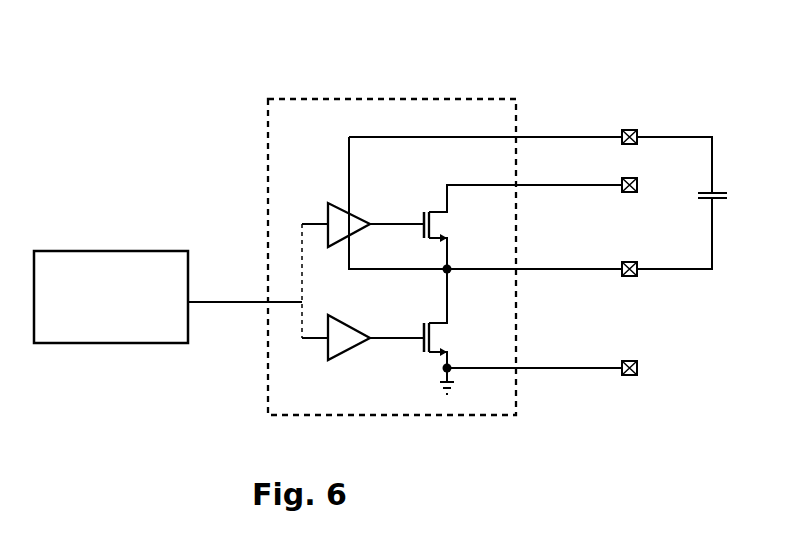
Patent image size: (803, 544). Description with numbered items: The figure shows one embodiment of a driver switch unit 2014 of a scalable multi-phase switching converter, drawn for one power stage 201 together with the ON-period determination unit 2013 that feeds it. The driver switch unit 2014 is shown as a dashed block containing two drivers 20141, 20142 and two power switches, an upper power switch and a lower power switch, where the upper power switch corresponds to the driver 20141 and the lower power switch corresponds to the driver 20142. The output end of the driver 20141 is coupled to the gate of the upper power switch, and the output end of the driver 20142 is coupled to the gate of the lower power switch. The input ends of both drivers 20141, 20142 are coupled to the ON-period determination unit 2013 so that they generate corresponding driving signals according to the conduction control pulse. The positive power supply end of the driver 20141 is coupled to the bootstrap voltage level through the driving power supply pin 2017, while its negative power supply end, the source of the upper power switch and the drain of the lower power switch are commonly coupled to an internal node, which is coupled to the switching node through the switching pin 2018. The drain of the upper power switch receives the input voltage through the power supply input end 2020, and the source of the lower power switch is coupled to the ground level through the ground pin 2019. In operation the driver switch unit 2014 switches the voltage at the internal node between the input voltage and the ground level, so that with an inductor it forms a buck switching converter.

The power stage 201 is at (178, 68).
The ON-period determination unit 2013 is at (111, 297).
The driver switch unit 2014 is at (423, 98).
The driver 20141 is at (351, 214).
The driver 20142 is at (372, 300).
The driving power supply pin 2017 is at (621, 131).
The power supply input end 2020 is at (621, 179).
The switching pin 2018 is at (621, 263).
The ground pin 2019 is at (621, 362).